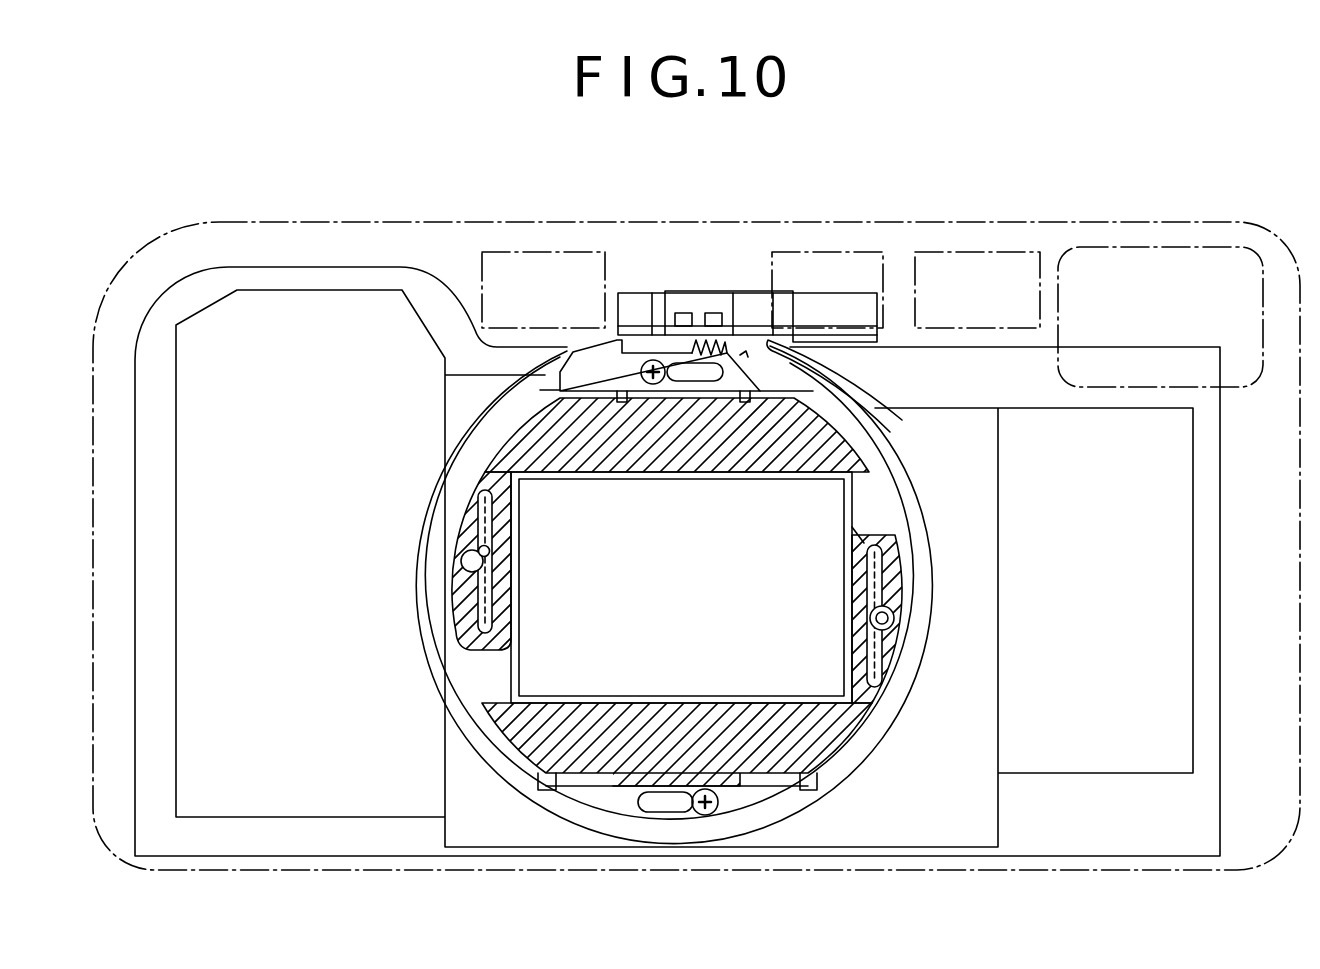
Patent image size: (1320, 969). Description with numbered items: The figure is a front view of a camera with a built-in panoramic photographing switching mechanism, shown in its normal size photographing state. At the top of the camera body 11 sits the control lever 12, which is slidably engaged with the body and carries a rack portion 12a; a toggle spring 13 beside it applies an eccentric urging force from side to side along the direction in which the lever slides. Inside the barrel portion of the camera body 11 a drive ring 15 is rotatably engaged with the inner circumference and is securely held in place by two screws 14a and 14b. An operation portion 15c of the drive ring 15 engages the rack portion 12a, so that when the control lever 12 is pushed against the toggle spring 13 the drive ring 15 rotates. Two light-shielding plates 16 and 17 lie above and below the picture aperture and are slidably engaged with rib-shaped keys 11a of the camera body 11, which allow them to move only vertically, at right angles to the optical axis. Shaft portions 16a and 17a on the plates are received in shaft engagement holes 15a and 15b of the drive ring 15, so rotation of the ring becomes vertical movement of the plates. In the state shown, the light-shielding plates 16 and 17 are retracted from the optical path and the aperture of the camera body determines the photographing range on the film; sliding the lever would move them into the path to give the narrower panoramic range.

The camera body 11 is at (820, 790).
The rib-shaped keys 11a is at (483, 597).
The control lever 12 is at (833, 297).
The rack portion 12a is at (830, 373).
The toggle spring 13 is at (740, 335).
The screw 14a is at (650, 345).
The screw 14b is at (712, 814).
The drive ring 15 is at (887, 513).
The shaft engagement hole 15a is at (497, 551).
The shaft engagement hole 15b is at (877, 590).
The operation portion 15c is at (740, 348).
The light-shielding plate 16 is at (746, 463).
The shaft portion 16a is at (470, 553).
The light-shielding plate 17 is at (697, 718).
The shaft portion 17a is at (905, 622).